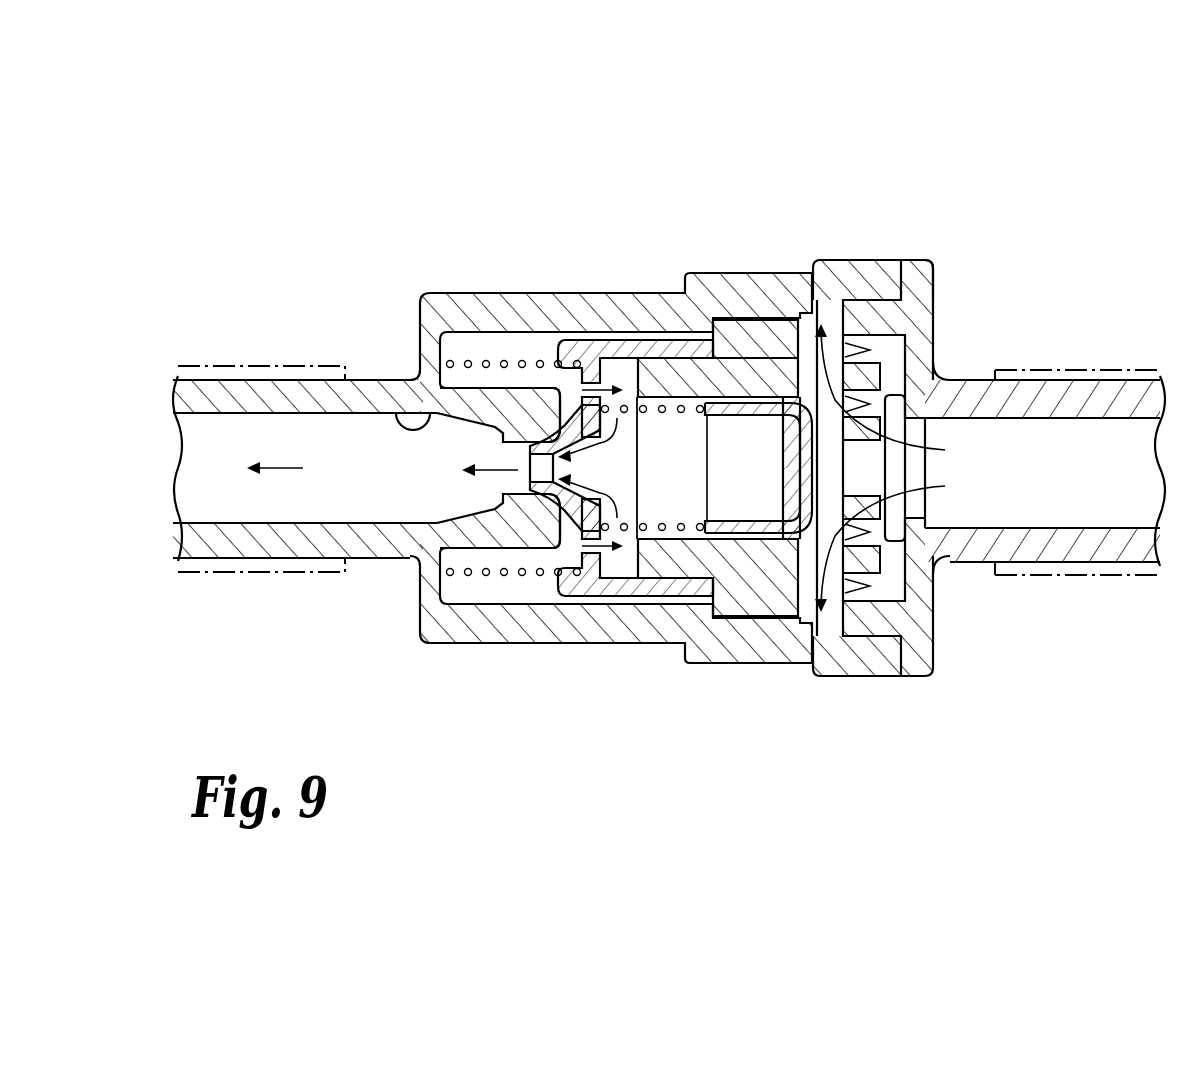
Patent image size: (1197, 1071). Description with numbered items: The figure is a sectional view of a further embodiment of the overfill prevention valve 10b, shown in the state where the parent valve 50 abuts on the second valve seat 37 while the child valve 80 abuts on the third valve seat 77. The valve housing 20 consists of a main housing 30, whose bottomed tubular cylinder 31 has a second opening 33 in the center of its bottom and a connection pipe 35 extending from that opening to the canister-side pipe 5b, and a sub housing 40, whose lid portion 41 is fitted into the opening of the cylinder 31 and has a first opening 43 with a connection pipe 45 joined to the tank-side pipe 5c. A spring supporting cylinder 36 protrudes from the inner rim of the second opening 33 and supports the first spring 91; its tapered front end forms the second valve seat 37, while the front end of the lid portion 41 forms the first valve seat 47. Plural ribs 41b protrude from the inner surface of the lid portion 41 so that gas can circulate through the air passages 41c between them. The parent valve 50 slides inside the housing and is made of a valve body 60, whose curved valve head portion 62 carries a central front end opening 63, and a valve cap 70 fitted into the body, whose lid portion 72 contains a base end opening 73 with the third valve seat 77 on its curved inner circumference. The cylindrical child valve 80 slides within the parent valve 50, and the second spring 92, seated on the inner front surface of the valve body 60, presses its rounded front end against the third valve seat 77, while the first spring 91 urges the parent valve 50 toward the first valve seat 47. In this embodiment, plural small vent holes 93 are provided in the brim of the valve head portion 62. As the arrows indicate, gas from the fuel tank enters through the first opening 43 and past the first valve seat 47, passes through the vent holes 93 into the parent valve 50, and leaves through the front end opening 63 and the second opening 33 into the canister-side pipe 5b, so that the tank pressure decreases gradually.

The overfill prevention valve 10b is at (446, 232).
The valve housing 20 is at (800, 180).
The main housing 30 is at (837, 246).
The cylinder 31 is at (485, 290).
The second opening 33 is at (400, 412).
The connection pipe 35 is at (272, 540).
The spring supporting cylinder 36 is at (488, 570).
The second valve seat 37 is at (545, 490).
The sub housing 40 is at (925, 247).
The lid portion 41 is at (915, 305).
The ribs 41b is at (862, 540).
The air passages 41c is at (858, 578).
The first opening 43 is at (933, 376).
The connection pipe 45 is at (1100, 545).
The first valve seat 47 is at (855, 640).
The parent valve 50 is at (632, 712).
The valve body 60 is at (635, 531).
The valve head portion 62 is at (560, 520).
The front end opening 63 is at (520, 433).
The valve cap 70 is at (717, 521).
The lid portion 72 is at (820, 595).
The base end opening 73 is at (850, 500).
The third valve seat 77 is at (790, 545).
The child valve 80 is at (750, 403).
The first spring 91 is at (570, 345).
The second spring 92 is at (658, 403).
The vent holes 93 is at (597, 340).
The canister-side pipe 5b is at (262, 362).
The tank-side pipe 5c is at (1112, 368).